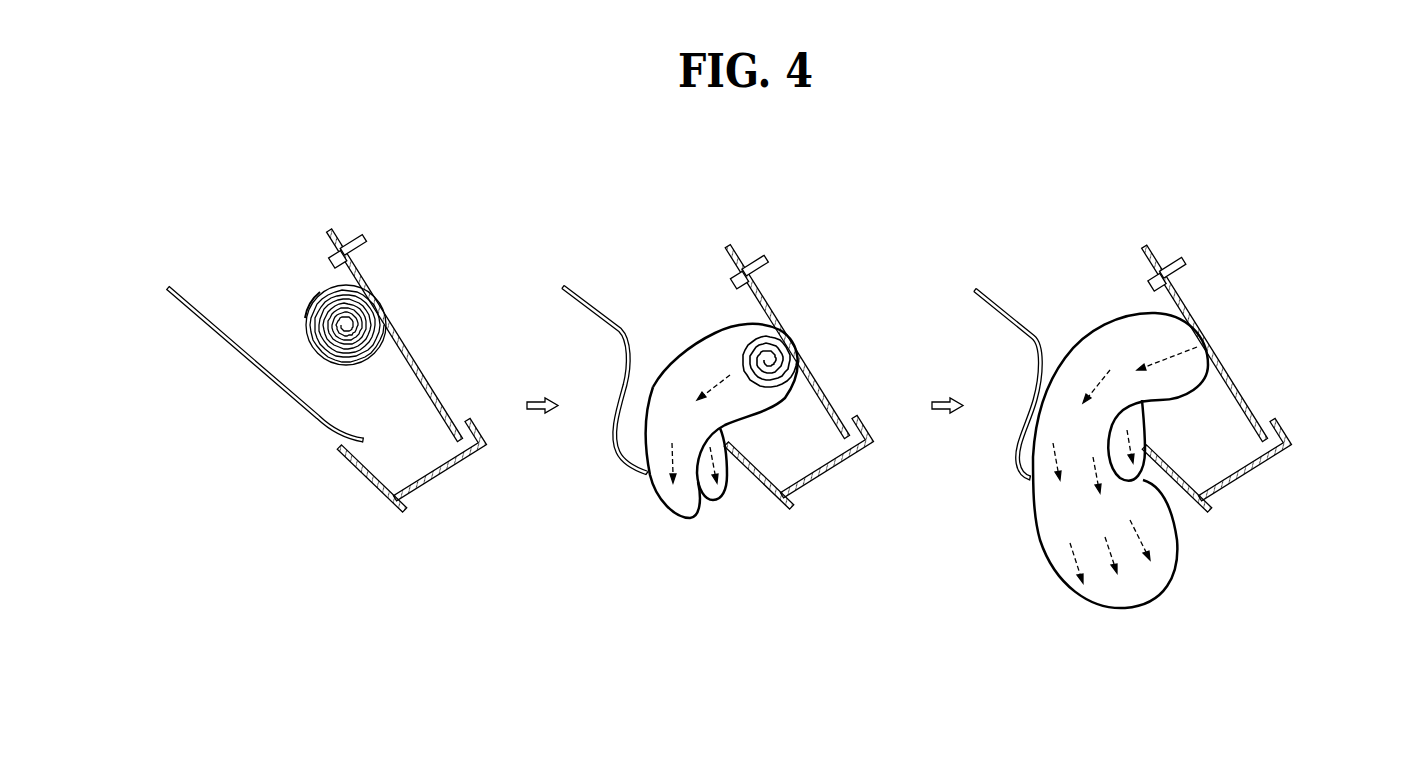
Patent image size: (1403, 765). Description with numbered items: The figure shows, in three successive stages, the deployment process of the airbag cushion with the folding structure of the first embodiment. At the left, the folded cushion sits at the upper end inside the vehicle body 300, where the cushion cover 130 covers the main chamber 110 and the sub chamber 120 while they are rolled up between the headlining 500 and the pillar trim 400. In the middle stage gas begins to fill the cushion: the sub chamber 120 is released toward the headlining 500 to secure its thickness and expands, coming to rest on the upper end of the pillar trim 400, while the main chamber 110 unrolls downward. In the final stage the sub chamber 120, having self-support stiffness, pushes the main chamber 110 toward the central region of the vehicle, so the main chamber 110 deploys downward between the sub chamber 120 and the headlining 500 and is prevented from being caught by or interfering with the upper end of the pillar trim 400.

The main chamber 110 is at (382, 304).
The sub chamber 120 is at (312, 317).
The cushion cover 130 is at (317, 293).
The vehicle body 300 is at (407, 345).
The pillar trim 400 is at (360, 473).
The headlining 500 is at (287, 403).